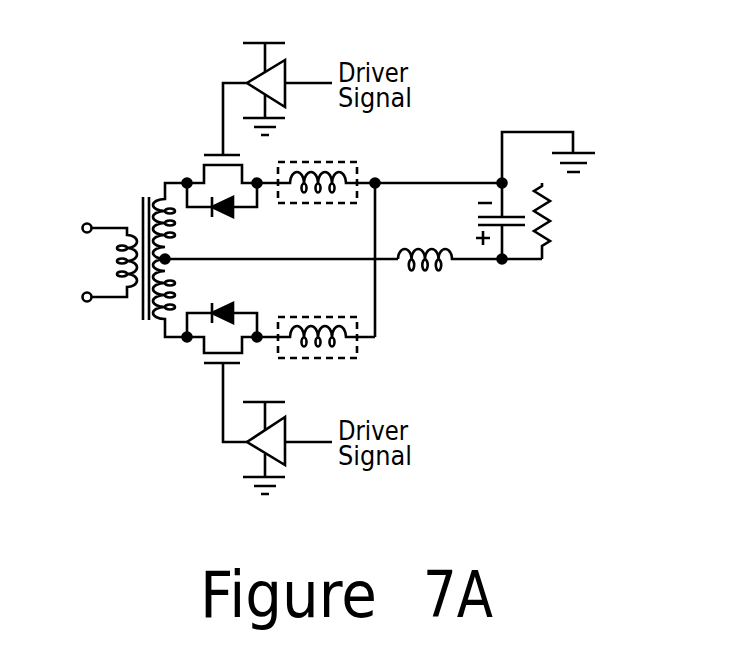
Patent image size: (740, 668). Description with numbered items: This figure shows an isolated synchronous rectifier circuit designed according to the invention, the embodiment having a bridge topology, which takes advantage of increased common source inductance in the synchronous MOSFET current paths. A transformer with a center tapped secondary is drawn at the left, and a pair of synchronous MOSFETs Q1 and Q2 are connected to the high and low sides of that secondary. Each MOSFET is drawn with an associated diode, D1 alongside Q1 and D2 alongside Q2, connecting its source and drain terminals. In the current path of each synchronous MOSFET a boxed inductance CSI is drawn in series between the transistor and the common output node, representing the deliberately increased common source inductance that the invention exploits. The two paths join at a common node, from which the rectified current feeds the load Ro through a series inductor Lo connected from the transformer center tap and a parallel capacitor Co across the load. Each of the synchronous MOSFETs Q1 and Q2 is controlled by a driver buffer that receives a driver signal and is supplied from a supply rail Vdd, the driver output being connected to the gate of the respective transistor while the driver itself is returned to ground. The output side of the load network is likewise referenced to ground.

The synchronous MOSFET Q1 is at (210, 133).
The synchronous MOSFET Q2 is at (207, 389).
The first diode D1 is at (222, 215).
The second diode D2 is at (222, 305).
The current sense inductor CSI is at (316, 244).
The series inductor Lo is at (470, 245).
The parallel capacitor Co is at (483, 221).
The load Ro is at (560, 221).
The driver supply voltage Vdd is at (287, 254).